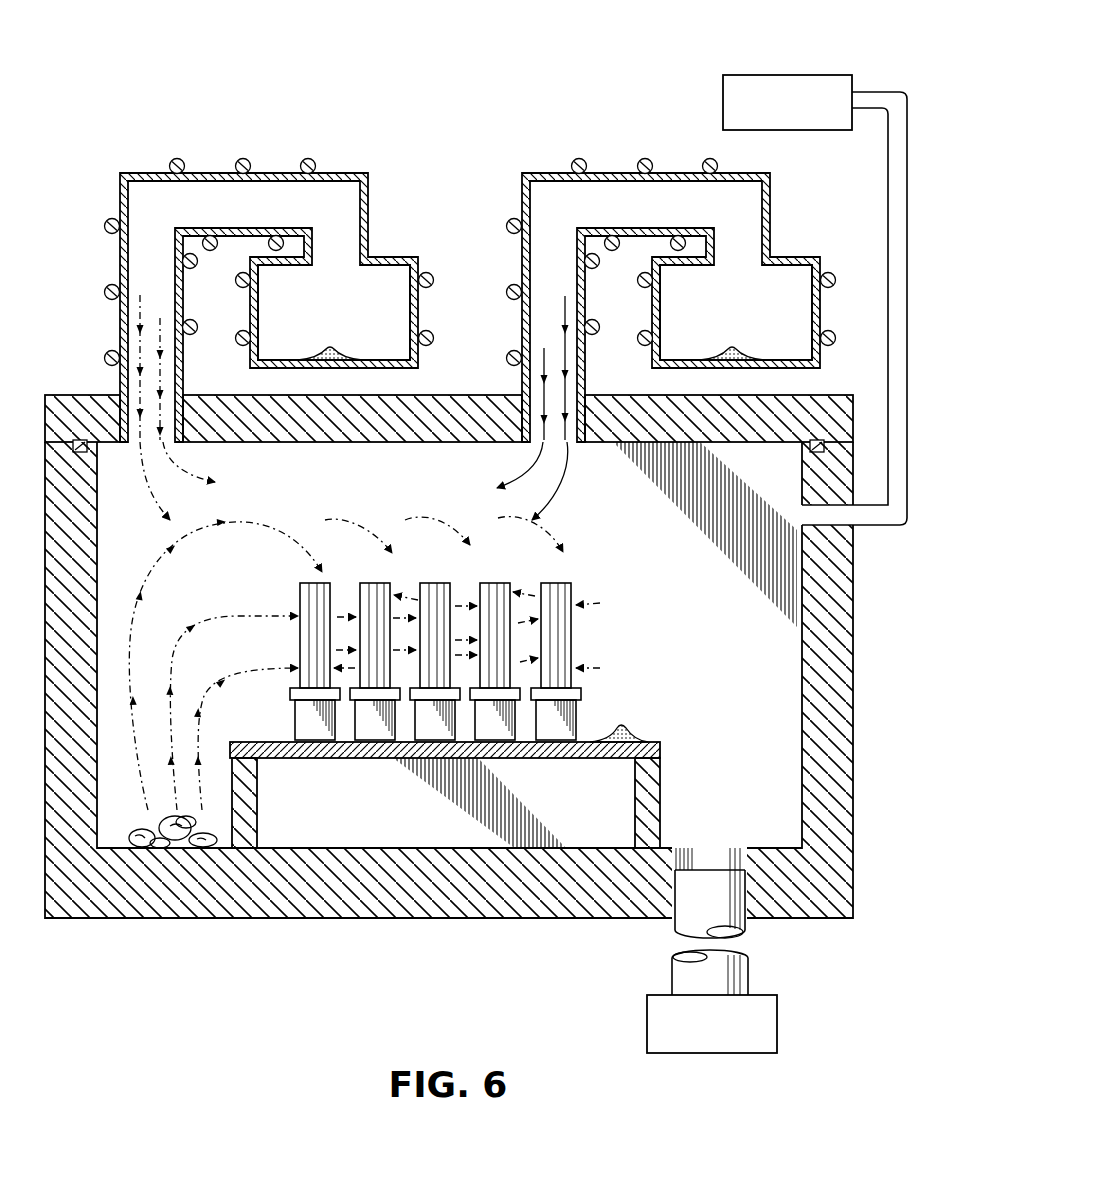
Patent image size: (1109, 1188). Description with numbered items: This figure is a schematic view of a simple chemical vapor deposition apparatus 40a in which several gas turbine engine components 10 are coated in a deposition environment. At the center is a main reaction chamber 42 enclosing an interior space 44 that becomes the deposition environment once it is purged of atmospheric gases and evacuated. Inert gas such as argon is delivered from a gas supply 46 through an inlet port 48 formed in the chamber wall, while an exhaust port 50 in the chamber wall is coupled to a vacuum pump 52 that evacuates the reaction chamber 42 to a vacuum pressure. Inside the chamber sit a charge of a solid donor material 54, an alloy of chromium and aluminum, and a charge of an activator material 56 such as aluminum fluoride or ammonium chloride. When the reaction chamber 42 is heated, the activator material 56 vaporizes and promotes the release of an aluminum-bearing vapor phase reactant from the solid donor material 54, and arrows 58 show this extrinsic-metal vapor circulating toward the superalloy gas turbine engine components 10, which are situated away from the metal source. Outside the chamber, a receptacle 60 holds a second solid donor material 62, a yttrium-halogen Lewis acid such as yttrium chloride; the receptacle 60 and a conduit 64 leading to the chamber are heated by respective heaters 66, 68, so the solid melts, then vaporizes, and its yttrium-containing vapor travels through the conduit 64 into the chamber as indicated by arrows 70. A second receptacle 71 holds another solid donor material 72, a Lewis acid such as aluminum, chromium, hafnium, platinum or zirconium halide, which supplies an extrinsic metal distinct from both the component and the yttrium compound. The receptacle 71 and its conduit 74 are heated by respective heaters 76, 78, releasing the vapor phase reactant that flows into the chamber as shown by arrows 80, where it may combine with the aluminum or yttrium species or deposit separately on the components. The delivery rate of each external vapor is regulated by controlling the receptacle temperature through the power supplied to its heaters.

The vapor deposition apparatus 40a is at (250, 46).
The main reaction chamber 42 is at (445, 395).
The interior space 44 is at (449, 680).
The gas supply 46 is at (829, 76).
The inlet port 48 is at (868, 525).
The exhaust port 50 is at (752, 983).
The vacuum pump 52 is at (778, 1018).
The solid donor material 54 is at (212, 826).
The activator material 56 is at (630, 728).
The arrows 58 is at (348, 512).
The gas turbine engine component 10 is at (371, 578).
The receptacle 60 is at (393, 257).
The second solid donor material 62 is at (344, 352).
The conduit 64 is at (128, 173).
The heater 66 is at (432, 340).
The heater 68 is at (106, 290).
The arrows 70 is at (160, 503).
The receptacle 71 is at (796, 257).
The solid donor material 72 is at (746, 352).
The conduit 74 is at (530, 173).
The heater 76 is at (834, 340).
The heater 78 is at (508, 290).
The arrows 80 is at (556, 492).